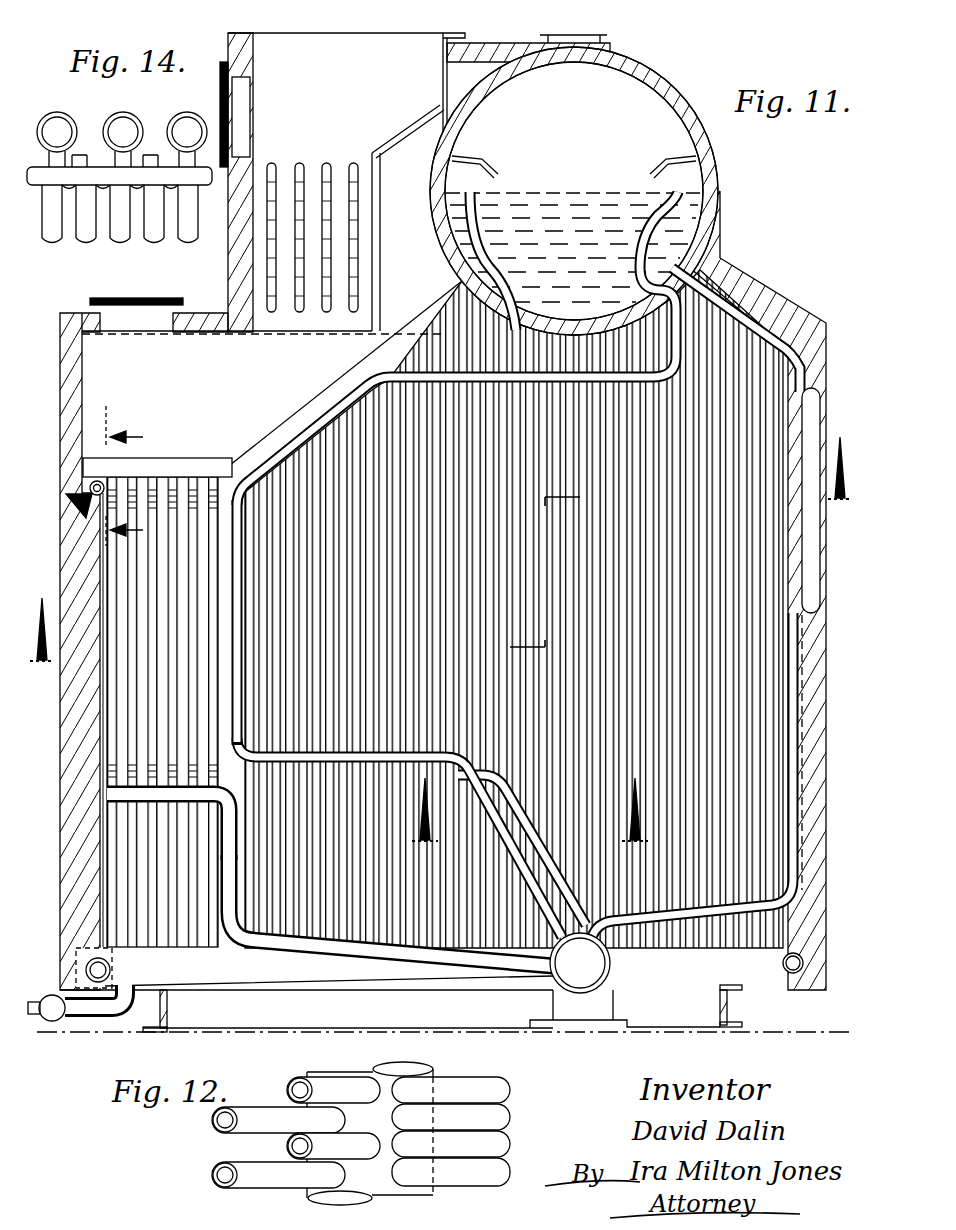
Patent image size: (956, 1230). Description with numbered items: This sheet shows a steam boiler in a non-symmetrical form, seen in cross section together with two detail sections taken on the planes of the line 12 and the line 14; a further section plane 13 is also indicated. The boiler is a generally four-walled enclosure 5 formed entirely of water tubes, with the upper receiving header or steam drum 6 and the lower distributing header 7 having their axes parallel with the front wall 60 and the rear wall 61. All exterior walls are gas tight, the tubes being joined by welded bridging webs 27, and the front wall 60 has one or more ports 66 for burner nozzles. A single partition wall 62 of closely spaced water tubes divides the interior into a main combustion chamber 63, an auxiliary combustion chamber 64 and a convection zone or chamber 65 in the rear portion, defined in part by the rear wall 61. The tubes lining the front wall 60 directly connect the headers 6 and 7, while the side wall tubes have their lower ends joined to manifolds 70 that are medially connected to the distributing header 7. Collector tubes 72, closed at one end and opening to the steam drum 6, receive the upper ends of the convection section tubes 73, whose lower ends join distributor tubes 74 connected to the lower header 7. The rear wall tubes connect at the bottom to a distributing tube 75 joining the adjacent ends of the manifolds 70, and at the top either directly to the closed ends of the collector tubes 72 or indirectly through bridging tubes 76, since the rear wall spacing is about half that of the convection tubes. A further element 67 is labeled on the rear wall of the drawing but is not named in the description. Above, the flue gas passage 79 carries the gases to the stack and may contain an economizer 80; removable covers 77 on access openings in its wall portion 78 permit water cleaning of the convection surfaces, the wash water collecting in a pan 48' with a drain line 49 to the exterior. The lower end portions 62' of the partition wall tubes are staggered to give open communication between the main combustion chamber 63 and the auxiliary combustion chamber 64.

In FIG. 11, the four-walled enclosure 5 is at (776, 205).
In FIG. 11, the upper receiving header or steam drum 6 is at (645, 118).
In FIG. 11, the lower distributing header 7 is at (636, 984).
In FIG. 12, the lower distributing header 7 is at (384, 1076).
In FIG. 11, the section line 12— 12 is at (533, 825).
In FIG. 11, the section line 13— 13 is at (445, 566).
In FIG. 11, the section line 14— 14 is at (352, 52).
In FIG. 11, the bridging webs 27 is at (100, 713).
In FIG. 14, the bridging webs 27 is at (105, 238).
In FIG. 12, the bridging webs 27 is at (470, 1077).
In FIG. 11, the pan 48' is at (306, 973).
In FIG. 11, the drain line 49 is at (95, 1010).
In FIG. 11, the front wall 60 is at (826, 357).
In FIG. 11, the rear wall 61 is at (100, 740).
In FIG. 11, the partition wall 62 is at (216, 585).
In FIG. 11, the lower end portions of partition wall tubes 62' is at (411, 837).
In FIG. 12, the lower end portions of partition wall tubes 62' is at (296, 1146).
In FIG. 11, the main combustion chamber 63 is at (712, 378).
In FIG. 11, the auxiliary combustion chamber 64 is at (342, 897).
In FIG. 11, the convection zone or chamber 65 is at (145, 577).
In FIG. 11, the ports 66 is at (792, 570).
In FIG. 11, the rear wall pipe 67 is at (784, 674).
In FIG. 11, the manifolds 70 is at (702, 976).
In FIG. 11, the collector tubes 72 is at (298, 398).
In FIG. 14, the collector tubes 72 is at (62, 112).
In FIG. 11, the convection section tubes 73 is at (168, 484).
In FIG. 11, the distributor tubes 74 is at (112, 797).
In FIG. 11, the distributing tube 75 is at (118, 962).
In FIG. 11, the bridging tubes 76 is at (90, 488).
In FIG. 14, the bridging tubes 76 is at (86, 165).
In FIG. 11, the covers 77 is at (148, 300).
In FIG. 11, the wall portion 78 is at (212, 312).
In FIG. 11, the flue gas passage 79 is at (190, 386).
In FIG. 11, the economizer 80 is at (326, 162).